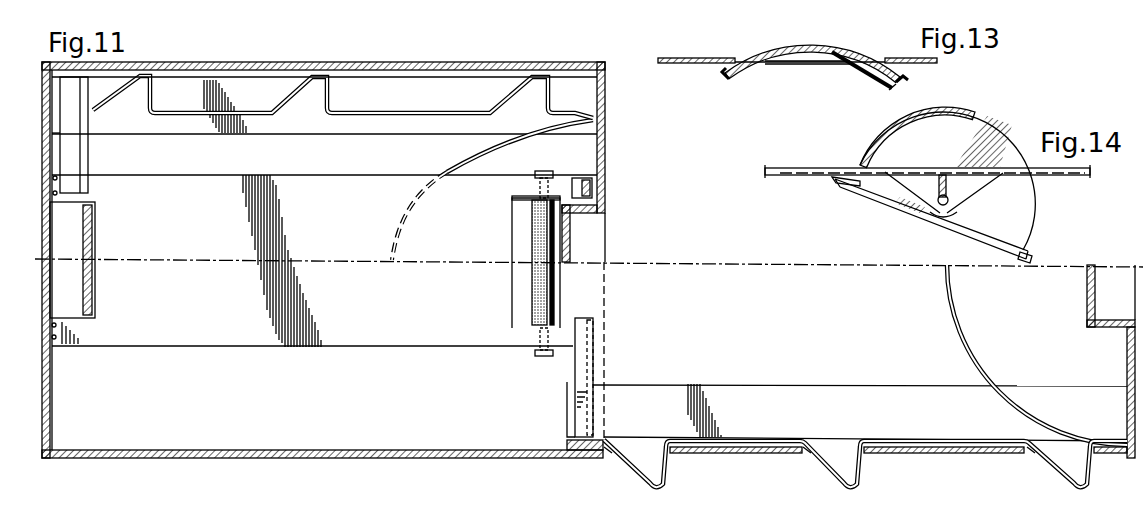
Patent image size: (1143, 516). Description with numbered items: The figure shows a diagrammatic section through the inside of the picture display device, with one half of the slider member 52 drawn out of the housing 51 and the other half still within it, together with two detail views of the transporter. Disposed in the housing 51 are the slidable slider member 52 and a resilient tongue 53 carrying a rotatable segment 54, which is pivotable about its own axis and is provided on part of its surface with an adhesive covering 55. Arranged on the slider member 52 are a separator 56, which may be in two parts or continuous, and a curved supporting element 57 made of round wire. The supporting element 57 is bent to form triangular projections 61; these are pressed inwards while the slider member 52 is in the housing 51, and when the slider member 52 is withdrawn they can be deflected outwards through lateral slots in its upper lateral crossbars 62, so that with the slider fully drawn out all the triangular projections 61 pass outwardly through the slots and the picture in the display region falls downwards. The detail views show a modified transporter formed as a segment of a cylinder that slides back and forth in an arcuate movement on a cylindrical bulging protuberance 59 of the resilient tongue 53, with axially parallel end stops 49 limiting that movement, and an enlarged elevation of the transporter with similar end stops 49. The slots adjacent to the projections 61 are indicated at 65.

In FIG. 13, the end stops 49 is at (722, 77).
In FIG. 14, the end stops 49 is at (836, 182).
In FIG. 11, the housing 51 is at (239, 462).
In FIG. 11, the slider member 52 is at (172, 129).
In FIG. 11, the resilient tongue 53 is at (338, 348).
In FIG. 13, the resilient tongue 53 is at (690, 57).
In FIG. 14, the resilient tongue 53 is at (797, 166).
In FIG. 11, the rotatable segment 54 is at (552, 293).
In FIG. 13, the rotatable segment 54 is at (873, 72).
In FIG. 14, the rotatable segment 54 is at (1026, 208).
In FIG. 11, the adhesive covering 55 is at (530, 232).
In FIG. 13, the adhesive covering 55 is at (765, 50).
In FIG. 14, the adhesive covering 55 is at (958, 108).
In FIG. 11, the separator 56 is at (87, 157).
In FIG. 11, the curved supporting element 57 is at (445, 174).
In FIG. 13, the cylindrical bulging protuberance 59 is at (795, 64).
In FIG. 11, the triangular projections 61 is at (148, 97).
In FIG. 11, the upper lateral crossbars 62 is at (484, 65).
In FIG. 11, the slot 65 is at (613, 452).